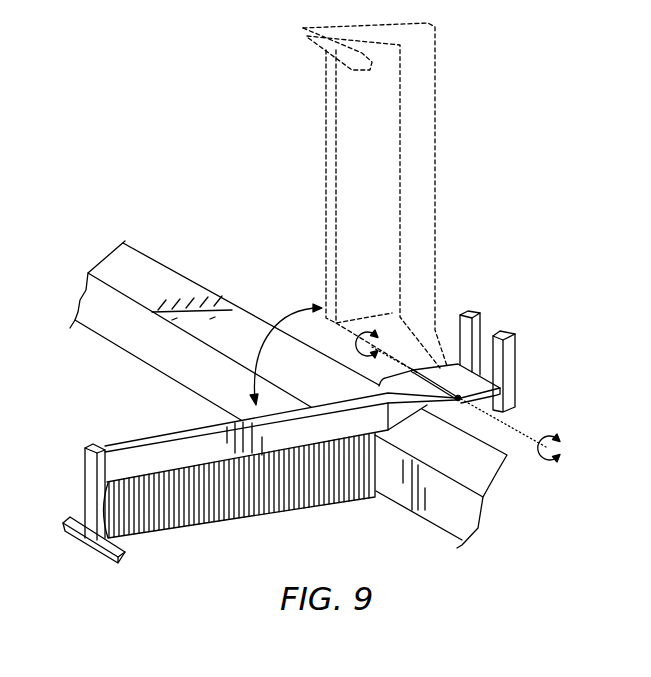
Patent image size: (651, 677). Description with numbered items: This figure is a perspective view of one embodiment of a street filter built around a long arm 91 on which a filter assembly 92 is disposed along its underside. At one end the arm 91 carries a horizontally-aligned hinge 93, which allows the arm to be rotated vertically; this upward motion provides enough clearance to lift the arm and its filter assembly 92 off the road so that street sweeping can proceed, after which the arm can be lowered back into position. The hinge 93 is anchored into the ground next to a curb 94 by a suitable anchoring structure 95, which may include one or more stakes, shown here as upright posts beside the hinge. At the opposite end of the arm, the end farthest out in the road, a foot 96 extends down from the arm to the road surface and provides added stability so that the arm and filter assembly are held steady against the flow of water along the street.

The arm 91 is at (163, 428).
The filter assembly 92 is at (248, 528).
The hinge 93 is at (458, 401).
The curb 94 is at (153, 282).
The anchoring structure 95 is at (502, 315).
The foot 96 is at (90, 490).